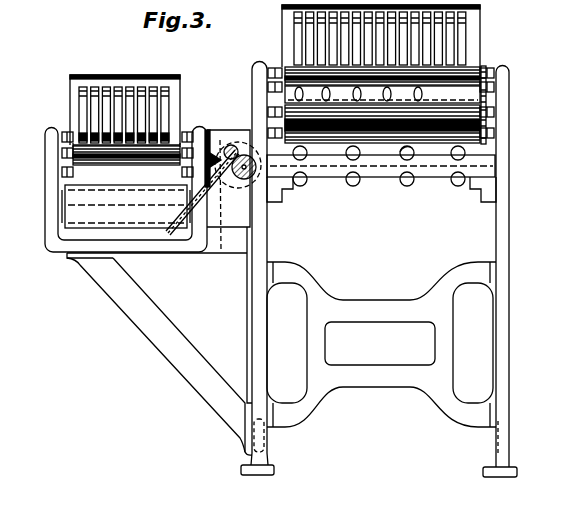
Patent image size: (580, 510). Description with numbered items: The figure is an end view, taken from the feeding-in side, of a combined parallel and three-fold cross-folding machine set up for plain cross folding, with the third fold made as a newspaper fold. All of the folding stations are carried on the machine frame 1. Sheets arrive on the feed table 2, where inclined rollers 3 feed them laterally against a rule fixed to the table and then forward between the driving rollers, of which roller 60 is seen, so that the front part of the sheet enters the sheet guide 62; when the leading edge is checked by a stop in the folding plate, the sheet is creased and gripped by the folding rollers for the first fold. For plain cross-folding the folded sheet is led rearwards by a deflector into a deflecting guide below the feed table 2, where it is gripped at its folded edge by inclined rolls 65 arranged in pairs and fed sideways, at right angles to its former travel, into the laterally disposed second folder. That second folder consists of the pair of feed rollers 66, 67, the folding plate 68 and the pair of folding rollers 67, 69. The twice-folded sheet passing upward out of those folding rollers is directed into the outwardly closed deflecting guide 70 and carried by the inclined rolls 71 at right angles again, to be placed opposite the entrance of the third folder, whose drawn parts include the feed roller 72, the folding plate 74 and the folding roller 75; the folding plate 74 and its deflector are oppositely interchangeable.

The machine frame 1 is at (262, 350).
The feed table 2 is at (484, 127).
The inclined rollers 3 is at (452, 97).
The feed roller 60 is at (310, 82).
The sheet guide 62 is at (470, 22).
The inclined rolls 65 is at (463, 173).
The feed roller 66 is at (248, 192).
The feed roller 67 is at (247, 152).
The folding plate 68 is at (221, 250).
The folding roller 69 is at (220, 140).
The deflecting guide 70 is at (80, 129).
The inclined rolls 71 is at (104, 169).
The feed roller 72 is at (172, 132).
The folding plate 74 is at (76, 100).
The folding roller 75 is at (158, 166).